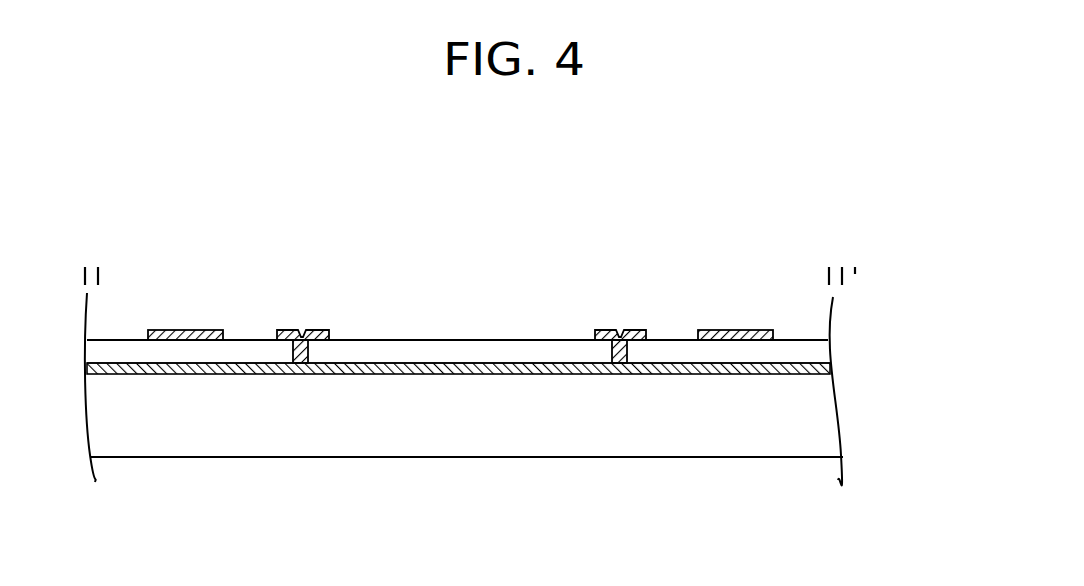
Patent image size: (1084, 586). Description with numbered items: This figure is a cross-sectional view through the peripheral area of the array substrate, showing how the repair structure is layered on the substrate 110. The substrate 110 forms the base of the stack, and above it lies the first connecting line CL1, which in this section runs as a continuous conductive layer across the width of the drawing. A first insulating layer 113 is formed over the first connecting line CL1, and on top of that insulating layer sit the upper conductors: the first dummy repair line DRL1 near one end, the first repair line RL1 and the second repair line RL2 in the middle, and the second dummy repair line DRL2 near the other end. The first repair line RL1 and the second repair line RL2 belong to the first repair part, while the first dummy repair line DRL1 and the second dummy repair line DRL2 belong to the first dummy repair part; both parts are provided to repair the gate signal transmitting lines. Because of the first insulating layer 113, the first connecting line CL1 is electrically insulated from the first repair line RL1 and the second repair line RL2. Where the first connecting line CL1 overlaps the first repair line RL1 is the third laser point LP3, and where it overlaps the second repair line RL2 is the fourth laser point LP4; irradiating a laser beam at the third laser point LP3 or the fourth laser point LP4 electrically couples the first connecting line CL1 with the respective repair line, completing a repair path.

The substrate 110 is at (823, 425).
The first insulating layer 113 is at (823, 350).
The first connecting line CL1 is at (450, 374).
The first dummy repair line DRL1 is at (182, 340).
The second dummy repair line DRL2 is at (738, 340).
The first repair line RL1 is at (302, 363).
The second repair line RL2 is at (621, 363).
The third laser point LP3 is at (302, 313).
The fourth laser point LP4 is at (620, 313).